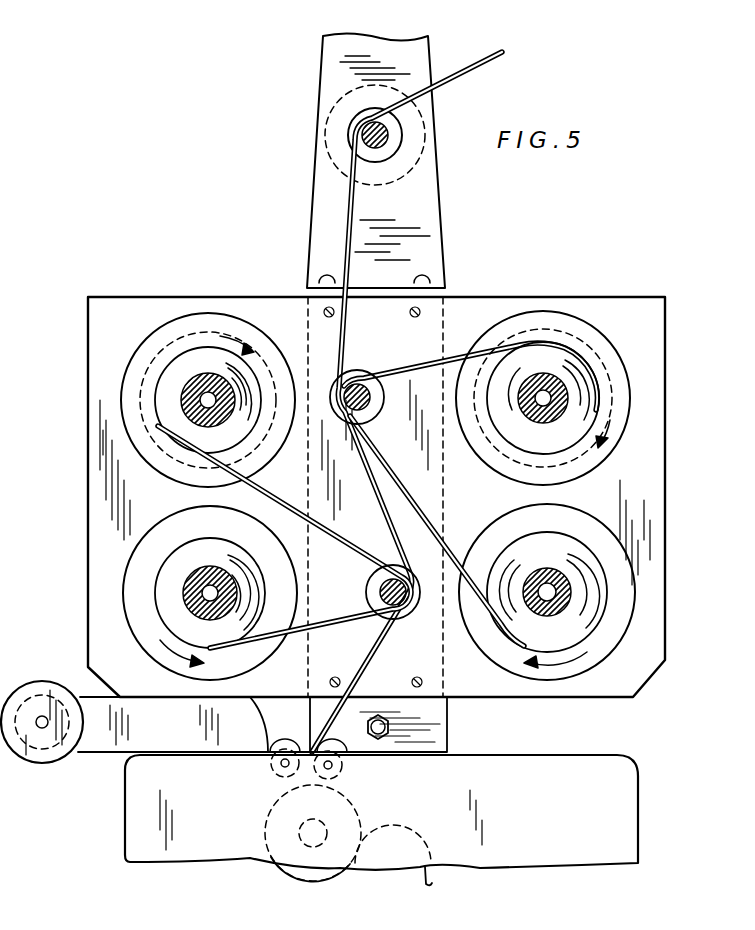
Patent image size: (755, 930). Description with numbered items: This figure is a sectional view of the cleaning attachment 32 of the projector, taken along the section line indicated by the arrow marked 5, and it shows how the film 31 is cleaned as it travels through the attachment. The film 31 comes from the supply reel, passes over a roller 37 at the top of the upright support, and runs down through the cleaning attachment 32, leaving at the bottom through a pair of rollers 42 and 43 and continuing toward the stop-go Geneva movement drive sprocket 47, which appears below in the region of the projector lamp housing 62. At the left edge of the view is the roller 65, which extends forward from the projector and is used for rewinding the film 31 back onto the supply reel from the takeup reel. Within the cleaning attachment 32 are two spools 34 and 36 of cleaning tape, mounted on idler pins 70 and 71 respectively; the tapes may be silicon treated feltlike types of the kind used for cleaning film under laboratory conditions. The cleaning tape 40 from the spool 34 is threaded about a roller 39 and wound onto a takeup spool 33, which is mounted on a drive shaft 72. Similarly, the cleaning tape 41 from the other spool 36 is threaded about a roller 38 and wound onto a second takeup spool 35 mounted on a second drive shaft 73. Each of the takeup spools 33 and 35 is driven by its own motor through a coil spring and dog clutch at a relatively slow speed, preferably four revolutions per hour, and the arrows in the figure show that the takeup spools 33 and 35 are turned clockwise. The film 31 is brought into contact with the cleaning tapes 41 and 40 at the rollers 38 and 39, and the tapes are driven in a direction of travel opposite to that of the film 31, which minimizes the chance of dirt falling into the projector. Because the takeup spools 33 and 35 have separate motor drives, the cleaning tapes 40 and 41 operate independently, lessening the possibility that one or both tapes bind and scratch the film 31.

The section view indicator 5 is at (4, 871).
The film 31 is at (350, 212).
The cleaning attachment 32 is at (140, 290).
The takeup spool 33 is at (167, 400).
The spool 34 is at (170, 593).
The second takeup spool 35 is at (579, 398).
The spool 36 is at (582, 592).
The roller 37 is at (406, 148).
The roller 38 is at (357, 372).
The roller 39 is at (412, 620).
The cleaning tape 40 is at (258, 496).
The cleaning tape 41 is at (432, 523).
The roller 42 is at (280, 746).
The roller 43 is at (361, 729).
The stop-go Geneva movement drive sprocket 47 is at (352, 803).
The projector lamp housing 62 is at (611, 748).
The roller 65 is at (43, 681).
The idler pin 70 is at (190, 606).
The idler pin 71 is at (553, 592).
The drive shaft 72 is at (188, 390).
The second drive shaft 73 is at (560, 385).